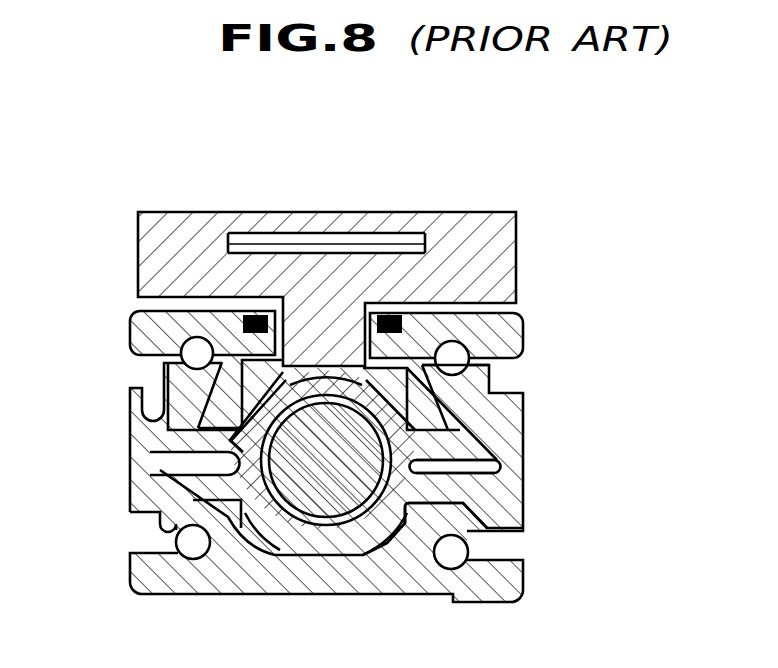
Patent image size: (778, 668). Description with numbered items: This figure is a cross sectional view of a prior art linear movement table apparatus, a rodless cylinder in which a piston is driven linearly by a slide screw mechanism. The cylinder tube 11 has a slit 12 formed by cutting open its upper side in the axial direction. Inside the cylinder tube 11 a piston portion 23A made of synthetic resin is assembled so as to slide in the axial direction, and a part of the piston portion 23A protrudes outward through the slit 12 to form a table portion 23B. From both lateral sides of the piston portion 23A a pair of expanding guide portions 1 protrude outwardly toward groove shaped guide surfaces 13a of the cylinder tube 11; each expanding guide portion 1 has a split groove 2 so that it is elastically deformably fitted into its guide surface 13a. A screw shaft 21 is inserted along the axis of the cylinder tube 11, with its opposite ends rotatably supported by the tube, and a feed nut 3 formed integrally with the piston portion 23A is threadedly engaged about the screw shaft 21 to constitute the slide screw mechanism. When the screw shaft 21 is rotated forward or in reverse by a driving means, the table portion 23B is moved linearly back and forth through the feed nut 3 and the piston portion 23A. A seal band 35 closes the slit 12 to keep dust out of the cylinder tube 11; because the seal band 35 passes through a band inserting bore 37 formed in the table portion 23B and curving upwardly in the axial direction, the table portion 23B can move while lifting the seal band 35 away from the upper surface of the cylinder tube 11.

The expanding guide portion 1 is at (490, 430).
The split groove 2 is at (497, 467).
The feed nut 3 is at (302, 490).
The cylinder tube 11 is at (524, 425).
The slit 12 is at (362, 305).
The guide surface 13a is at (487, 530).
The screw shaft 21 is at (347, 490).
The piston portion 23A is at (137, 358).
The table portion 23B is at (245, 212).
The seal band 35 is at (425, 232).
The band inserting bore 37 is at (425, 246).